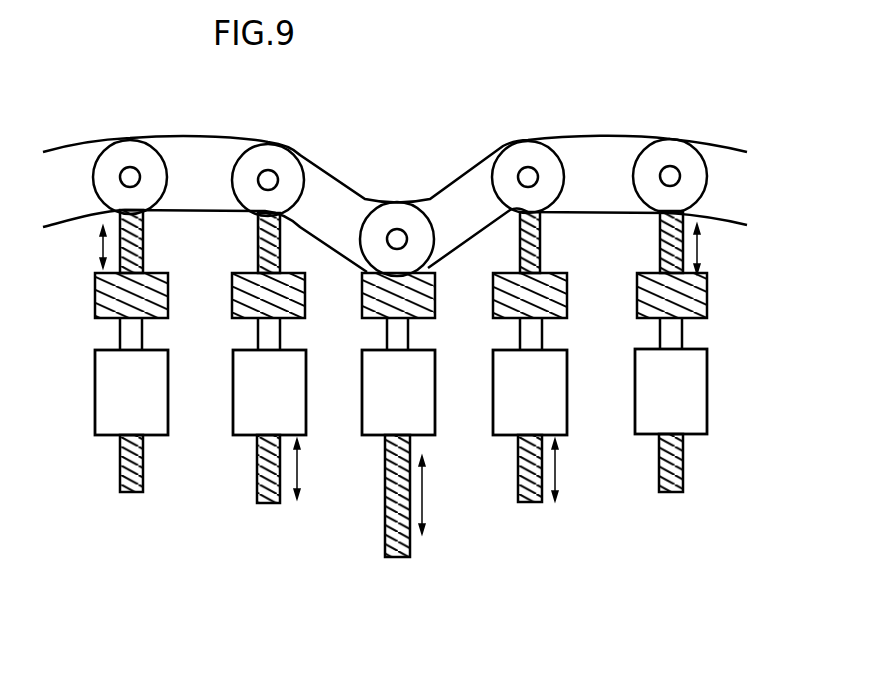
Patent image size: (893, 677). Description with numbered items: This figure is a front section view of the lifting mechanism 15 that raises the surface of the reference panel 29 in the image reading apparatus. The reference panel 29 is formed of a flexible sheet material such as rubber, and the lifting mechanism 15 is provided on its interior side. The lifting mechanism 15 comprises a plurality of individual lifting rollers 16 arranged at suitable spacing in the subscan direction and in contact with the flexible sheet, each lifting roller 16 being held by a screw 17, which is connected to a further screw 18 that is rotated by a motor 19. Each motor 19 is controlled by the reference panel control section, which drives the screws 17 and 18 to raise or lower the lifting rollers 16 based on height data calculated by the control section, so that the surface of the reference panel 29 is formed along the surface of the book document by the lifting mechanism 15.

The lifting mechanism 15 is at (585, 625).
The lifting roller 16 is at (702, 182).
The screw 17 is at (660, 228).
The screw 18 is at (705, 312).
The motor 19 is at (688, 410).
The reference panel 29 is at (425, 200).